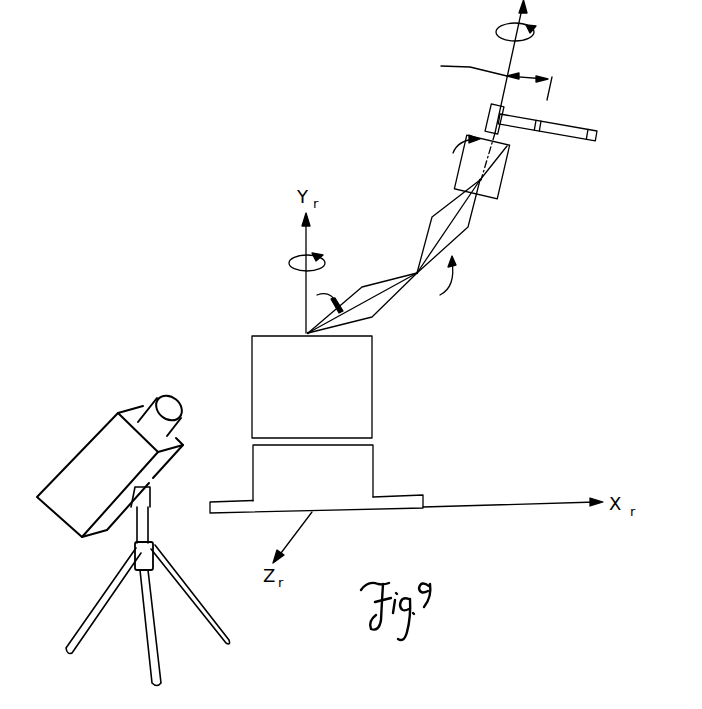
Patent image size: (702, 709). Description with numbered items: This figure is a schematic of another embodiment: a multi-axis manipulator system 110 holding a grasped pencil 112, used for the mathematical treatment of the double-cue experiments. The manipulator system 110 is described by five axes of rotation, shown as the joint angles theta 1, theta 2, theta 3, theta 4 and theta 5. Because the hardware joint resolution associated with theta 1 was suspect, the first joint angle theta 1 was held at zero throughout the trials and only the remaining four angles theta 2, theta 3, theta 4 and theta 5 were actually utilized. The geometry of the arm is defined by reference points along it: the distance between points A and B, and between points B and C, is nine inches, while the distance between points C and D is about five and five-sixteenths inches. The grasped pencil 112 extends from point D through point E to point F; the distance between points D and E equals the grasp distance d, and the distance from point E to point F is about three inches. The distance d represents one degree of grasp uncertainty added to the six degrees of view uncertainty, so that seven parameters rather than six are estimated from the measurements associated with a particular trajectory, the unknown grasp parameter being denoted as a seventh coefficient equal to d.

The manipulator system 110 is at (385, 256).
The grasped pencil 112 is at (522, 125).
The first joint angle theta one 1 is at (320, 259).
The second joint angle theta two 2 is at (347, 343).
The third joint angle theta three 3 is at (422, 233).
The fourth joint angle theta four 4 is at (509, 151).
The fifth joint angle theta five 5 is at (528, 31).
The point A is at (300, 326).
The point B is at (409, 264).
The point C is at (486, 186).
The point D is at (489, 119).
The point E is at (539, 116).
The point F is at (595, 126).
The grasp distance d is at (486, 78).